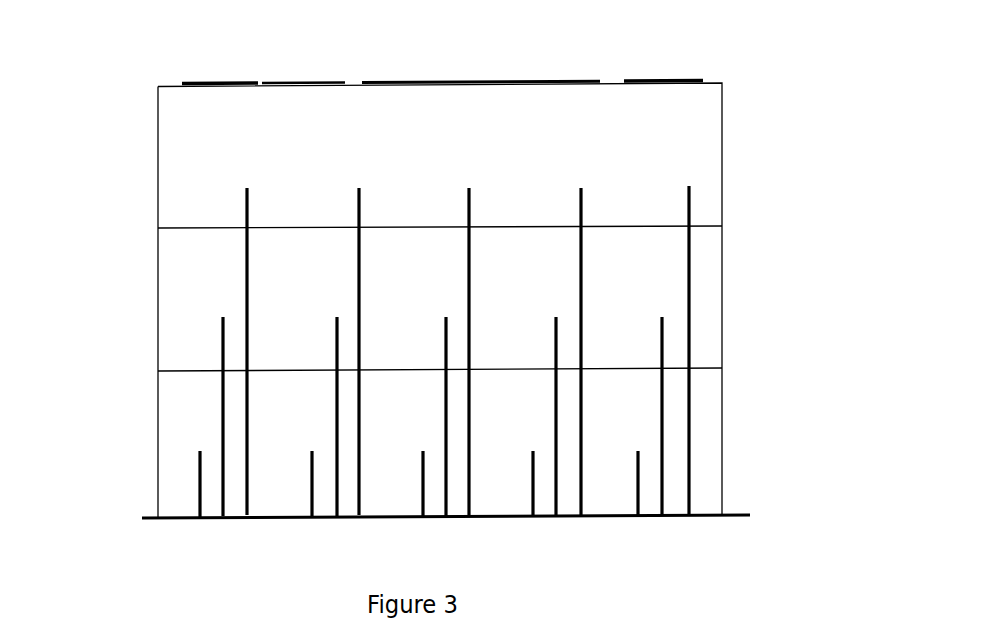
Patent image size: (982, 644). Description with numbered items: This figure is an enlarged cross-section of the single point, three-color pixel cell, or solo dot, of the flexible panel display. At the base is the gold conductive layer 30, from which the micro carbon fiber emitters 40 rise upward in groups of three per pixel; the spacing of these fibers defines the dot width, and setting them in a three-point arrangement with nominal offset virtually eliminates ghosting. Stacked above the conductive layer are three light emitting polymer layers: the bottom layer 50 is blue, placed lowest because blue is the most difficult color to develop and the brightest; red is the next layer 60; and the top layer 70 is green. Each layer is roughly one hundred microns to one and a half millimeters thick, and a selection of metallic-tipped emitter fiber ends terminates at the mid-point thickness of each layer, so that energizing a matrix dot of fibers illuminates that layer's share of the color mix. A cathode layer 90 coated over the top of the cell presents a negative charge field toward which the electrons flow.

The gold conductive layer 30 is at (750, 515).
The micro carbon fiber emitters 40 is at (252, 258).
The bottom layer 50 is at (706, 441).
The red layer 60 is at (703, 296).
The top layer 70 is at (680, 138).
The cathode layer 90 is at (640, 79).